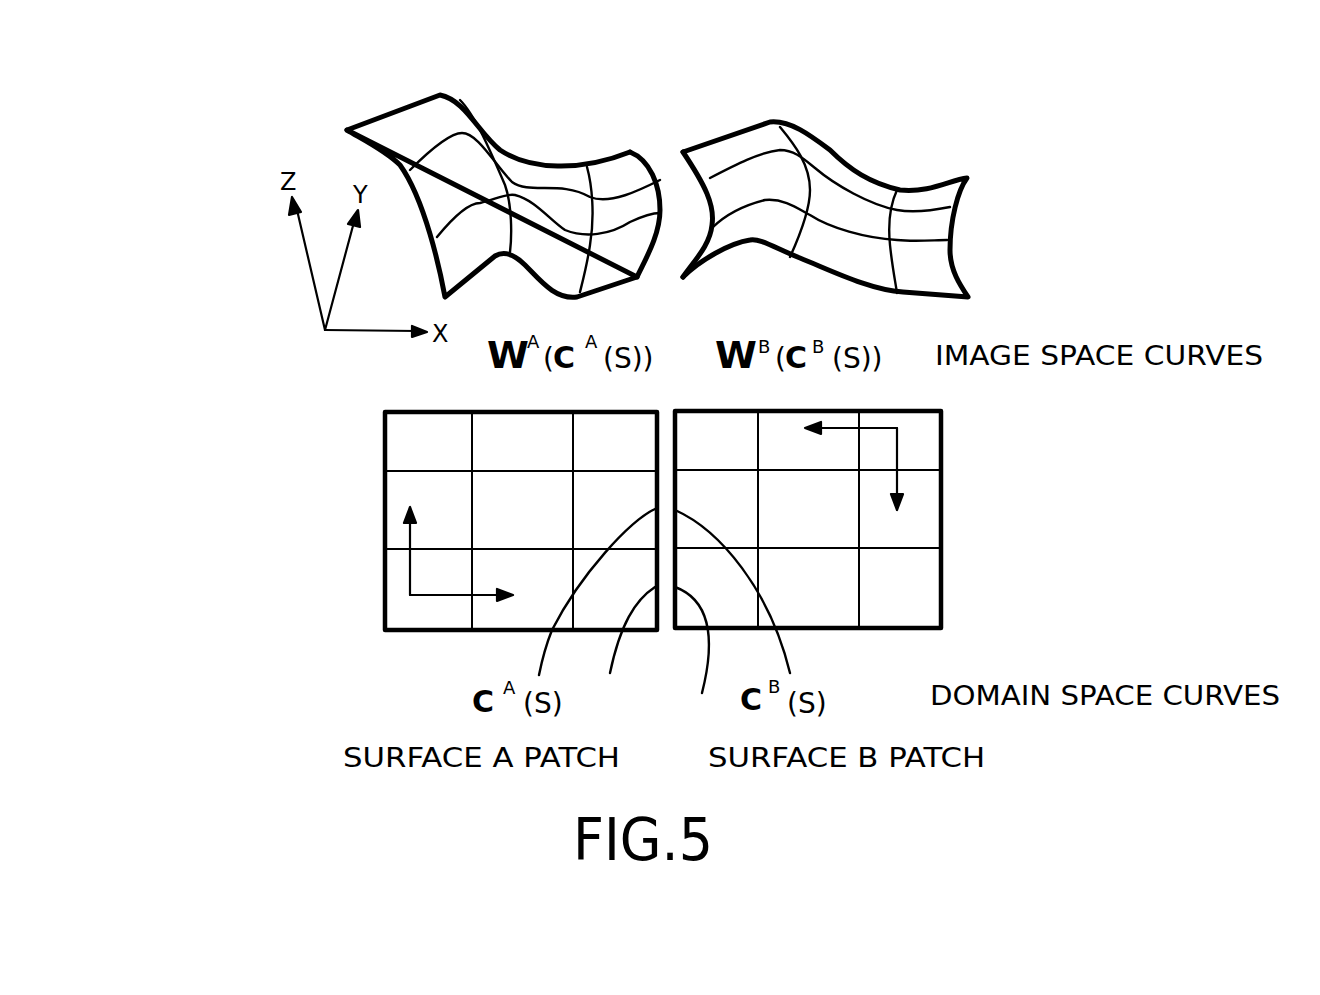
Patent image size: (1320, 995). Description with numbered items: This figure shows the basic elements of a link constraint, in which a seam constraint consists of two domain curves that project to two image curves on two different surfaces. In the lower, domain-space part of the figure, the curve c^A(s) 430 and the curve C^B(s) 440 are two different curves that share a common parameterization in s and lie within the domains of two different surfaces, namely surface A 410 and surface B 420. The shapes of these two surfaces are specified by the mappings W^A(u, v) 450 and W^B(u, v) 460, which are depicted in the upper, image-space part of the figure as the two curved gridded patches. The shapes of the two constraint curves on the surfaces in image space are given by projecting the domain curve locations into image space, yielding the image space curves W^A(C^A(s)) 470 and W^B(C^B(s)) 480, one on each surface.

The surface A 410 is at (383, 570).
The surface B 420 is at (943, 568).
The curve c^A(s) 430 is at (621, 651).
The curve C^B(s) 440 is at (693, 661).
The mapping W^A(u, v) 450 is at (401, 158).
The mapping W^B(u, v) 460 is at (906, 158).
The image space curve W^A(C^A(s)) 470 is at (650, 160).
The image space curve W^B(C^B(s)) 480 is at (712, 152).